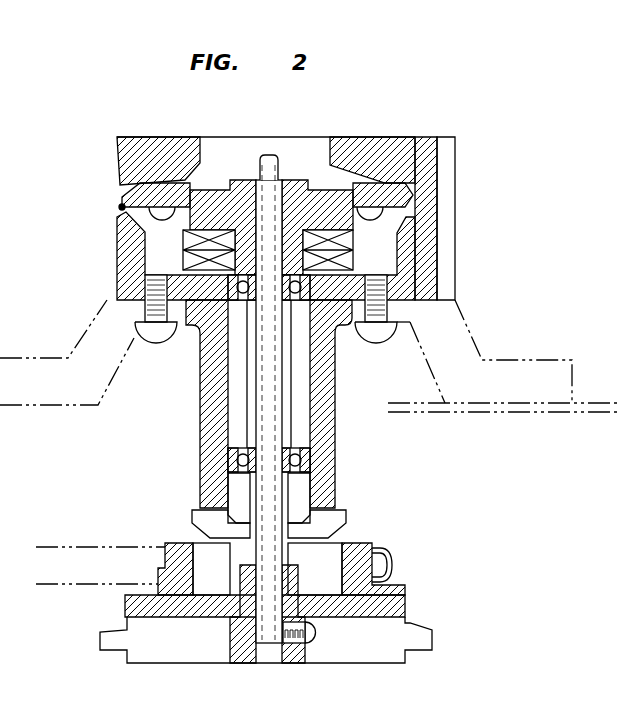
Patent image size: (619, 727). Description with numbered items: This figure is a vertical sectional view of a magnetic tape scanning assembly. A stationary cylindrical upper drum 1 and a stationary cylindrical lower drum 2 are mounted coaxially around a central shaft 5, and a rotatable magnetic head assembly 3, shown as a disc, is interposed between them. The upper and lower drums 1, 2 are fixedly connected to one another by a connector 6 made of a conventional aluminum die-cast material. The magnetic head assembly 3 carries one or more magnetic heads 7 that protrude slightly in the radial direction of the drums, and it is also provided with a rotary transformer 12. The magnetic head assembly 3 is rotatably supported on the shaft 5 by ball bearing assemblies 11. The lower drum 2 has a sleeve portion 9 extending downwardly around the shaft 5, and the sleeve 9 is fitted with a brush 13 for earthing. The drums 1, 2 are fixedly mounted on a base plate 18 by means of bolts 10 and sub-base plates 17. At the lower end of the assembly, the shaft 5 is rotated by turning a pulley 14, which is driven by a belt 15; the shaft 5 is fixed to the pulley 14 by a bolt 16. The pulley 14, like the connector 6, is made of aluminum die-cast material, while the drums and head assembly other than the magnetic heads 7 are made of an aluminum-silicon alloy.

The upper drum 1 is at (117, 160).
The lower drum 2 is at (117, 285).
The magnetic head assembly 3 is at (120, 200).
The shaft 5 is at (262, 408).
The connector 6 is at (445, 190).
The magnetic head 7 is at (120, 208).
The sleeve portion 9 is at (333, 435).
The bolt 10 is at (378, 332).
The ball bearing assembly 11 is at (237, 332).
The rotary transformer 12 is at (182, 248).
The brush 13 is at (192, 520).
The pulley 14 is at (125, 605).
The belt 15 is at (58, 556).
The bolt 16 is at (310, 640).
The sub-base plate 17 is at (505, 372).
The base plate 18 is at (590, 413).